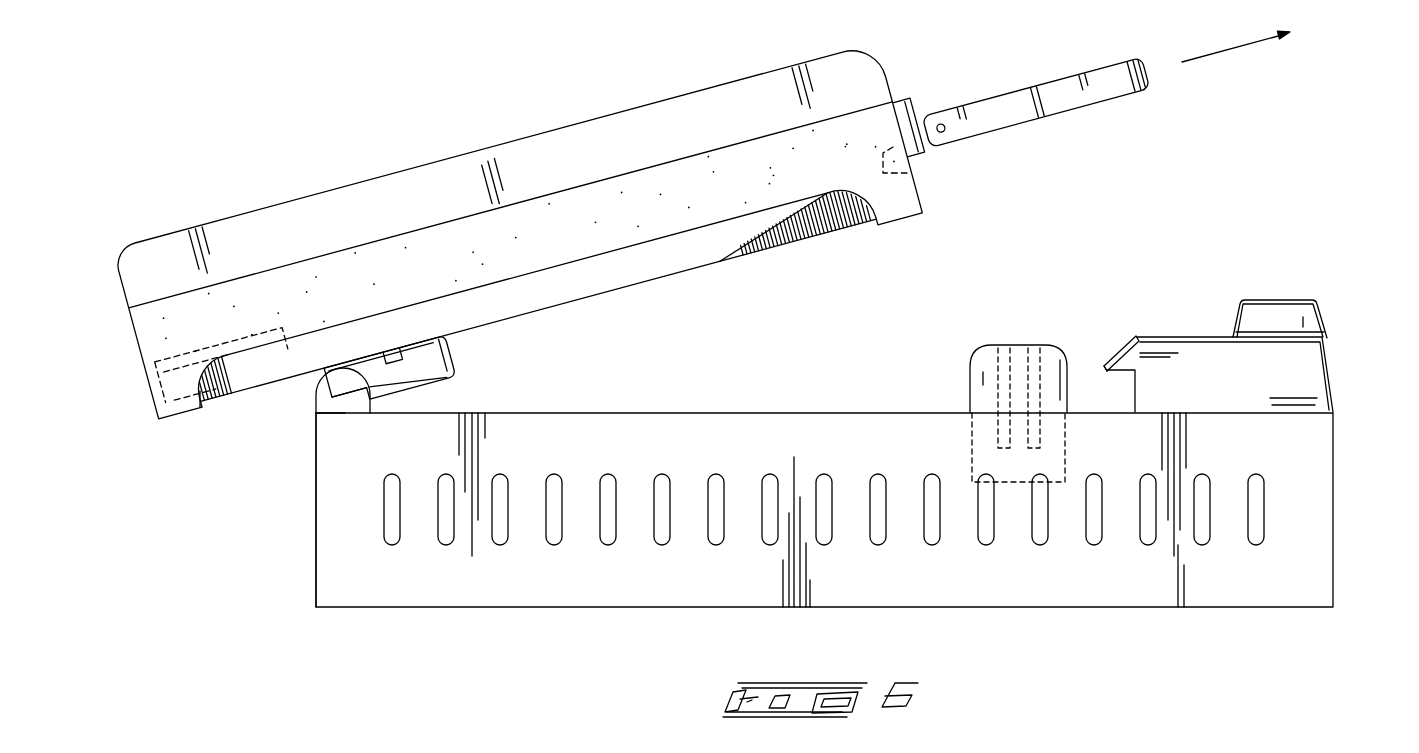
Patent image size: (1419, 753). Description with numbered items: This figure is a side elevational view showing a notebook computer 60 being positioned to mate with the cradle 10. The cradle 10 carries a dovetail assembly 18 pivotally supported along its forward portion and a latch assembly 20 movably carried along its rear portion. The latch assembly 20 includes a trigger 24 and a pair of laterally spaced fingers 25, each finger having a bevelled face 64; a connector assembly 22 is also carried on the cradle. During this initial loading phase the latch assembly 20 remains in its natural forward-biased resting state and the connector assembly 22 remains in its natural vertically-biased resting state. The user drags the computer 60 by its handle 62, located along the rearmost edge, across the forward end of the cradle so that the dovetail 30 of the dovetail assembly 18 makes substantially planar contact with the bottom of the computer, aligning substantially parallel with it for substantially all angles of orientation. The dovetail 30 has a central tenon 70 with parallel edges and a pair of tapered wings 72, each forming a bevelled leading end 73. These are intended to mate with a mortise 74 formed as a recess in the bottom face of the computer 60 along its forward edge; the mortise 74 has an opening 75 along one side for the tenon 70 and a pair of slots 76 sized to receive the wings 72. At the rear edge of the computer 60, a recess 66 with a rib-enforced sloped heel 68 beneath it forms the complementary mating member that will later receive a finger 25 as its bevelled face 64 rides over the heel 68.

The cradle 10 is at (1057, 658).
The dovetail assembly 18 is at (306, 404).
The latch assembly 20 is at (1345, 315).
The connector assembly 22 is at (977, 347).
The trigger 24 is at (1233, 313).
The fingers 25 is at (1132, 337).
The dovetail 30 is at (487, 370).
The notebook computer 60 is at (433, 163).
The handle 62 is at (1113, 63).
The bevelled face 64 is at (1110, 353).
The recess 66 is at (927, 202).
The sloped heel 68 is at (892, 232).
The tenon 70 is at (453, 353).
The tapered wings 72 is at (346, 370).
The bevelled leading end 73 is at (410, 386).
The mortise 74 is at (243, 378).
The opening 75 is at (216, 404).
The slots 76 is at (188, 406).